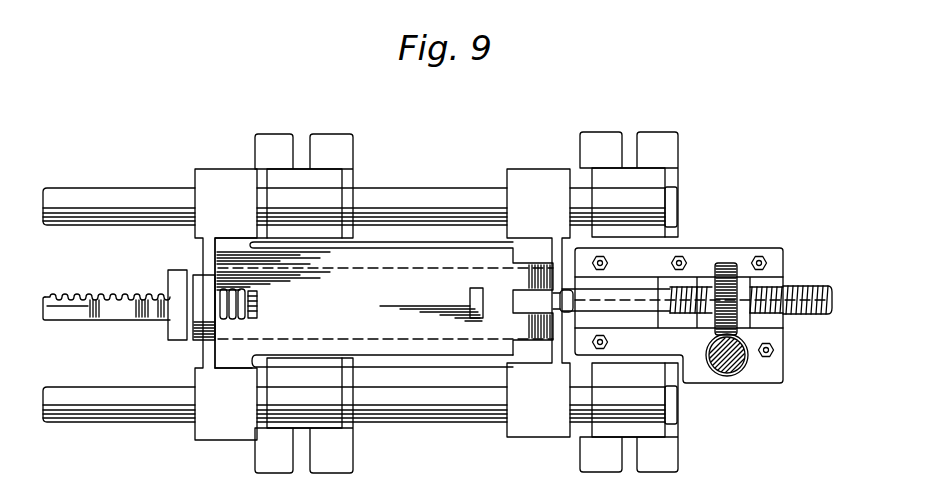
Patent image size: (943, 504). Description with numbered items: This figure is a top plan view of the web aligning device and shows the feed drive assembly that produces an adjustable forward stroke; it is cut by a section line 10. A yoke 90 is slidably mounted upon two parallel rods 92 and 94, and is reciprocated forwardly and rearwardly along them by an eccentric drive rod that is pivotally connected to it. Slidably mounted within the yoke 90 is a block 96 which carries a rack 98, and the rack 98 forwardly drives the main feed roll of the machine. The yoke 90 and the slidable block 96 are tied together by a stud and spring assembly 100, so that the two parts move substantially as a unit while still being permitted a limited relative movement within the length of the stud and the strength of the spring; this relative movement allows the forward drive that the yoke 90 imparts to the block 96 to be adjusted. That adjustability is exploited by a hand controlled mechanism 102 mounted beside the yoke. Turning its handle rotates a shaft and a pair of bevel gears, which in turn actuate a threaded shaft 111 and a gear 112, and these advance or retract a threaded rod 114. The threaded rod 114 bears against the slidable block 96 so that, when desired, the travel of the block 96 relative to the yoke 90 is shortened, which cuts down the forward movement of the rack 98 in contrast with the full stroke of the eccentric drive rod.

The section line 10 is at (69, 293).
The yoke 90 is at (403, 350).
The rod 92 is at (393, 412).
The rod 94 is at (408, 195).
The block 96 is at (335, 322).
The rack 98 is at (97, 312).
The stud and spring assembly 100 is at (186, 346).
The hand controlled mechanism 102 is at (727, 390).
The threaded shaft 111 is at (737, 370).
The gear 112 is at (723, 263).
The threaded rod 114 is at (803, 315).